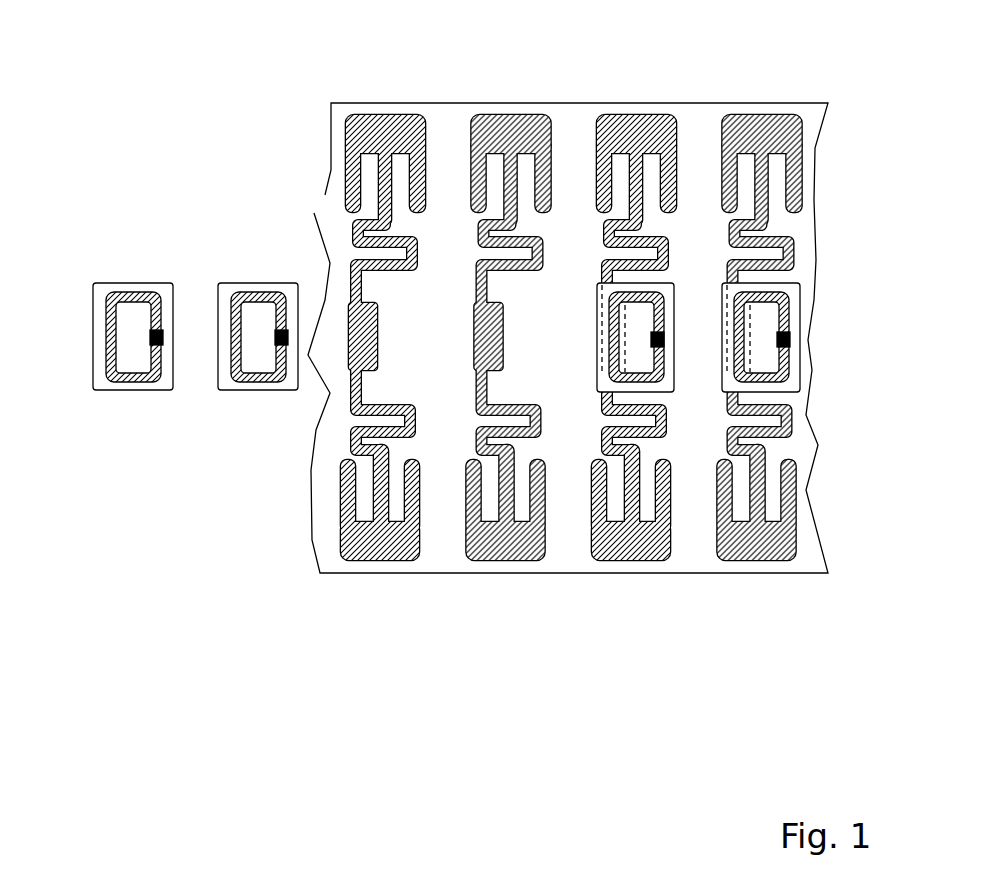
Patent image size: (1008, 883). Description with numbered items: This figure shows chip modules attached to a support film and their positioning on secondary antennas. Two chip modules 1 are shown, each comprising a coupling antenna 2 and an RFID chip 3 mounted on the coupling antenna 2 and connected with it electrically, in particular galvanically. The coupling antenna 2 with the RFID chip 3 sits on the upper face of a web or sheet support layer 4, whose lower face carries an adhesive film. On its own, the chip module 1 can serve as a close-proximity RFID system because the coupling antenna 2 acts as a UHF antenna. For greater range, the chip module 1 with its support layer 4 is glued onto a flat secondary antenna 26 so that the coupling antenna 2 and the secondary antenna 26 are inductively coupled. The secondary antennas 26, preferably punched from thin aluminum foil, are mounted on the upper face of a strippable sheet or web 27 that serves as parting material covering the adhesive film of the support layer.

The chip module 1 is at (413, 367).
The coupling antenna 2 is at (120, 376).
The RFID chip 3 is at (152, 335).
The support layer 4 is at (172, 288).
The secondary antenna 26 is at (388, 153).
The strippable sheet 27 is at (444, 528).